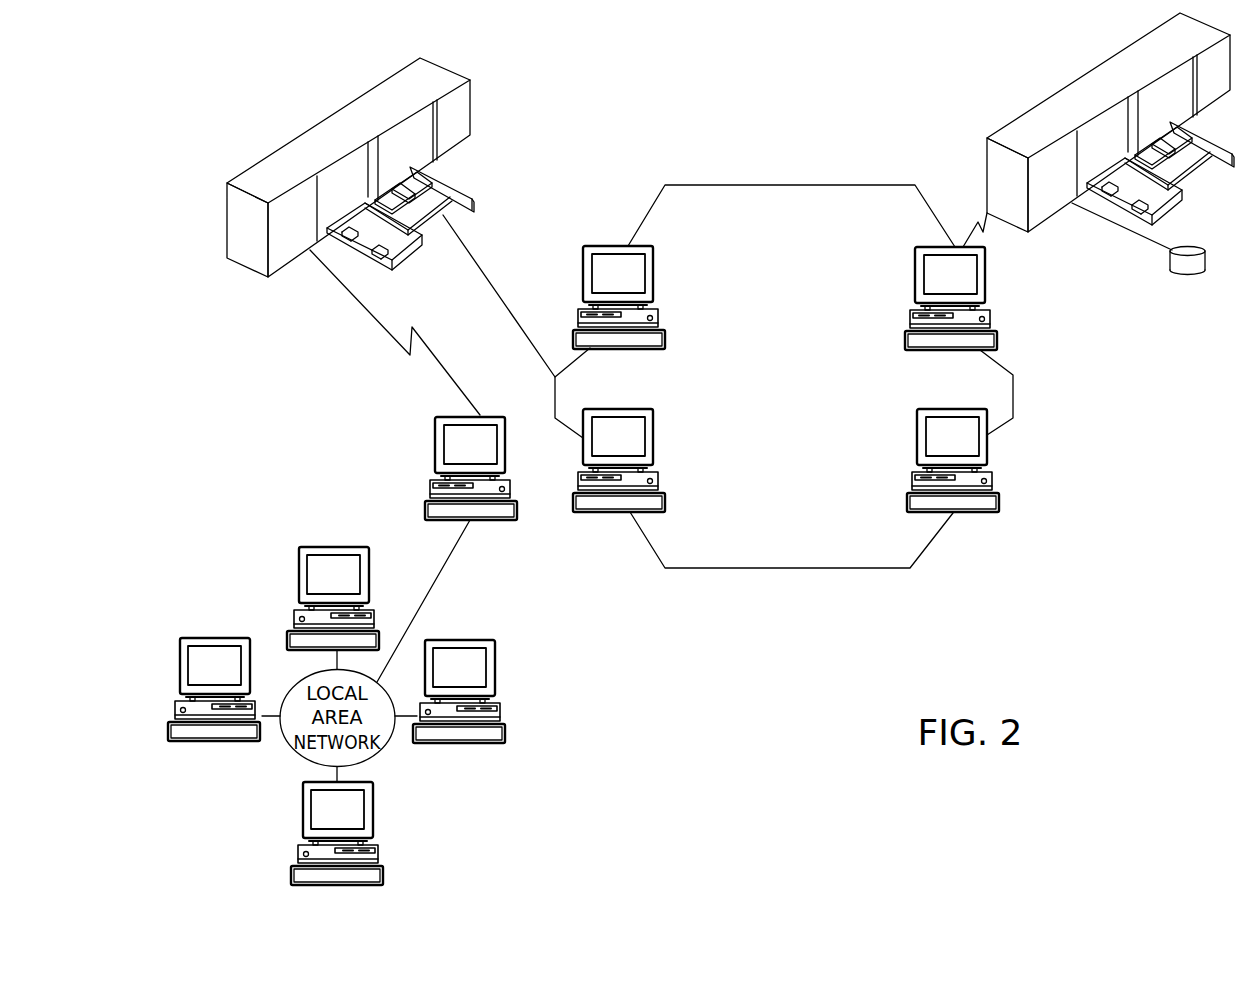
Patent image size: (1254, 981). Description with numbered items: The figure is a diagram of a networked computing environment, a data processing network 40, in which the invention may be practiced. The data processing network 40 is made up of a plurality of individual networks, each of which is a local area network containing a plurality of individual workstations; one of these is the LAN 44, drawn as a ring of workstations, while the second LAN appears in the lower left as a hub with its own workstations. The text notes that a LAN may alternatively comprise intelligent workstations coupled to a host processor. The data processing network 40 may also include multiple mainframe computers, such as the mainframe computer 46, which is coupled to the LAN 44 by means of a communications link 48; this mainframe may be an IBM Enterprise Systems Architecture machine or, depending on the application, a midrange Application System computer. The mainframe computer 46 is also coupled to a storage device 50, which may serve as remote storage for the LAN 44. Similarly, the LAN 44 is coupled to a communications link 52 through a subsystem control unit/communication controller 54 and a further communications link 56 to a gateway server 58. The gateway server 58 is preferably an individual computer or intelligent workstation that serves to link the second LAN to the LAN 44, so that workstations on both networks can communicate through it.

The data processing network 40 is at (784, 345).
The LAN 44 is at (783, 358).
The mainframe computer 46 is at (1068, 82).
The communications link 48 is at (978, 222).
The storage device 50 is at (1177, 278).
The communications link 52 is at (483, 270).
The subsystem control unit/communication controller 54 is at (290, 147).
The communications link 56 is at (345, 292).
The gateway server 58 is at (435, 422).